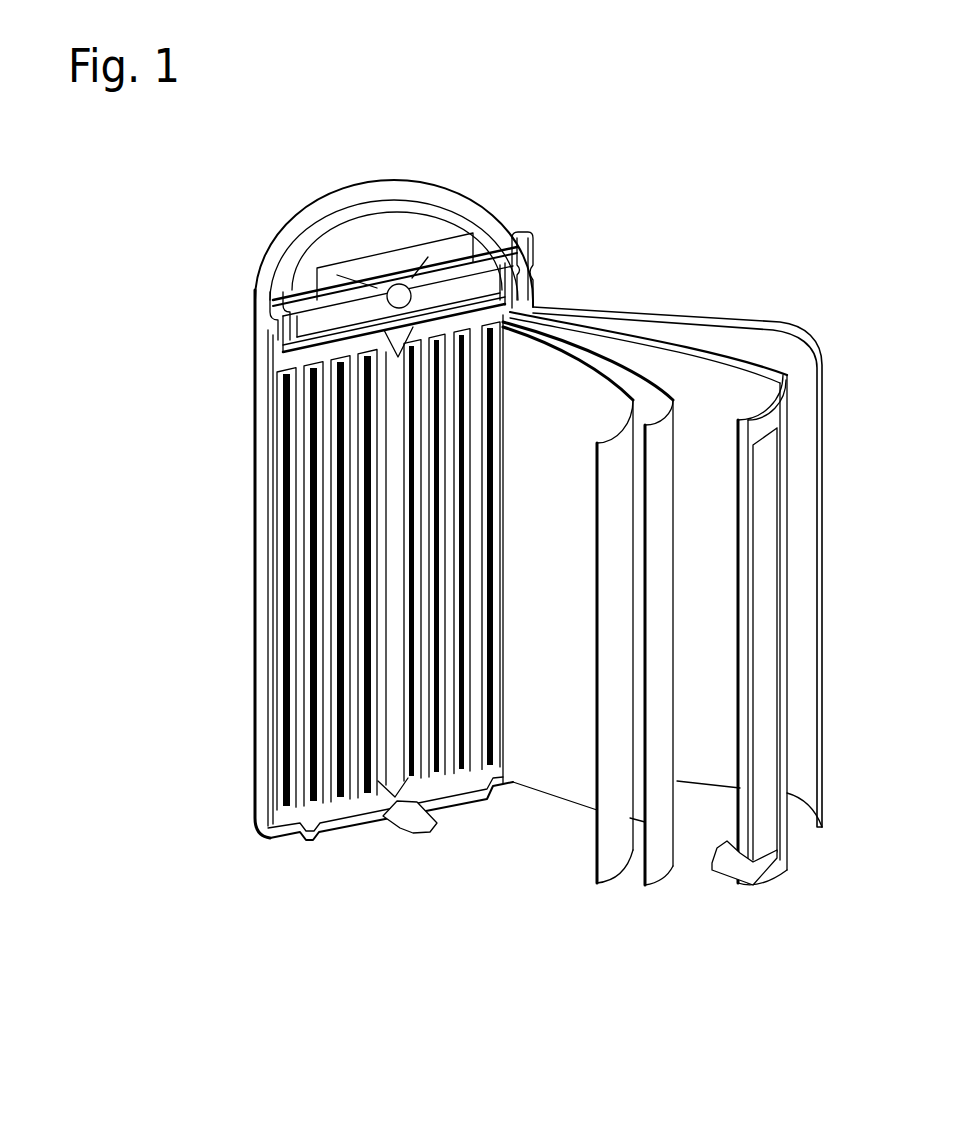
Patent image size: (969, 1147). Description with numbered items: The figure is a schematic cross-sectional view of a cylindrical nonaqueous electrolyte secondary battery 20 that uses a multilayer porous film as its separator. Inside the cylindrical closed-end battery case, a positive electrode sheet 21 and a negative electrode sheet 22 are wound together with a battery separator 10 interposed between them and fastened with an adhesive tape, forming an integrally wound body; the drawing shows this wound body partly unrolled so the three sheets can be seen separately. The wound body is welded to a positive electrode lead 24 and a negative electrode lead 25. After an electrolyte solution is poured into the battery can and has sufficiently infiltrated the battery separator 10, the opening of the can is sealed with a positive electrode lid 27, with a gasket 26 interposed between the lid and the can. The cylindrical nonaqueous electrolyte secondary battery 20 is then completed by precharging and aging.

The cylindrical nonaqueous electrolyte secondary battery 20 is at (240, 478).
The positive electrode lid 27 is at (376, 222).
The positive electrode lead 24 is at (400, 285).
The gasket 26 is at (285, 335).
The positive electrode sheet 21 is at (563, 793).
The battery separator 10 is at (650, 886).
The negative electrode sheet 22 is at (710, 768).
The negative electrode lead 25 is at (768, 870).